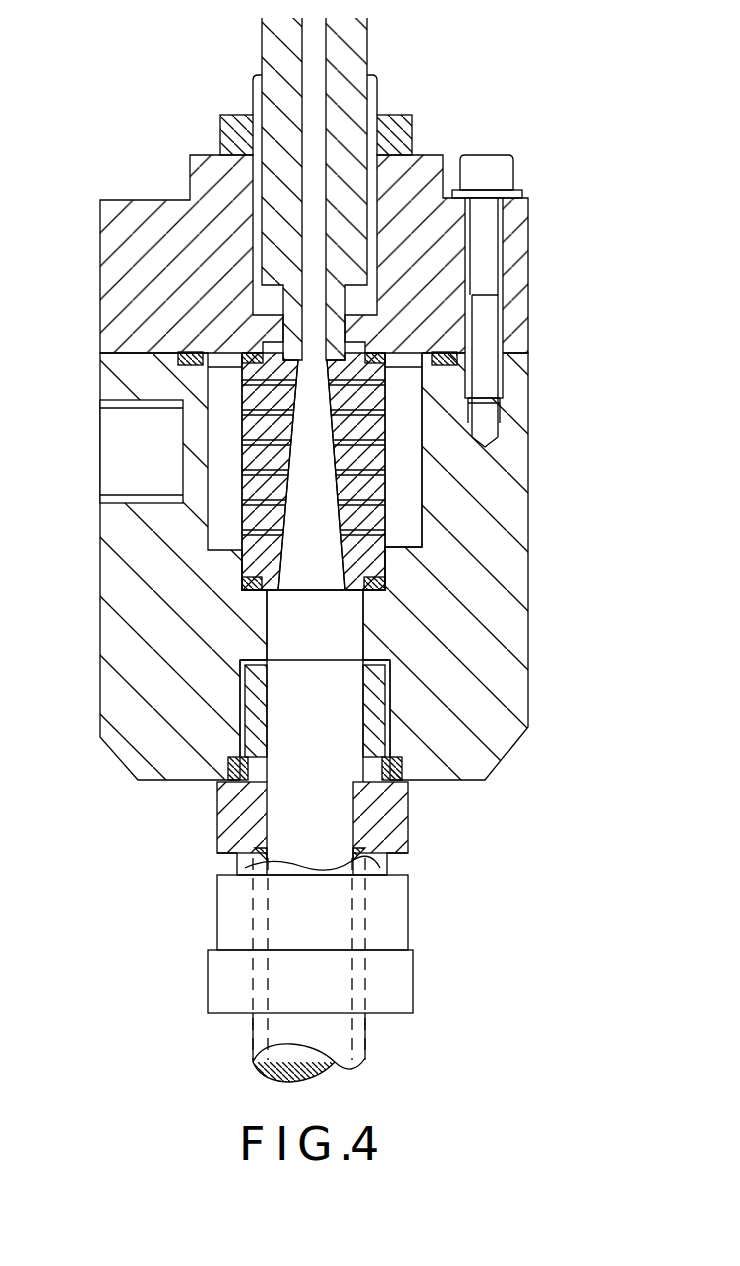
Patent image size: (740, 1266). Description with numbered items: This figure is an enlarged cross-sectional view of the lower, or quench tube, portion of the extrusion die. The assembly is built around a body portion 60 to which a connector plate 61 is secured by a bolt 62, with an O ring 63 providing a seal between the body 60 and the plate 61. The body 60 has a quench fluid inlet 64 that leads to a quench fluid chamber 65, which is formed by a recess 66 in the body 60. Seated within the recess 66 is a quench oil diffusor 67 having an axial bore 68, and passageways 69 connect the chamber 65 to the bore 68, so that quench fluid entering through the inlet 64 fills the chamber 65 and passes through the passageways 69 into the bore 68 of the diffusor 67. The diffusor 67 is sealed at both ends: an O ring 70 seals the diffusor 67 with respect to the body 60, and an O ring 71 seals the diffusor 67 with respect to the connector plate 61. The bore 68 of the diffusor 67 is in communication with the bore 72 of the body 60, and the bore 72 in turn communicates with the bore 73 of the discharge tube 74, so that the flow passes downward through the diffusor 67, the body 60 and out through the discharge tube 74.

The body portion 60 is at (527, 678).
The connector plate 61 is at (432, 163).
The bolt 62 is at (488, 267).
The O ring 63 is at (185, 352).
The quench fluid inlet 64 is at (118, 472).
The quench fluid chamber 65 is at (220, 382).
The recess 66 is at (400, 543).
The quench oil diffusor 67 is at (242, 520).
The axial bore 68 is at (323, 570).
The passageways 69 is at (257, 475).
The O ring 70 is at (390, 600).
The O ring 71 is at (250, 352).
The bore of body 72 is at (323, 638).
The bore of discharge tube 73 is at (267, 793).
The discharge tube 74 is at (365, 1030).